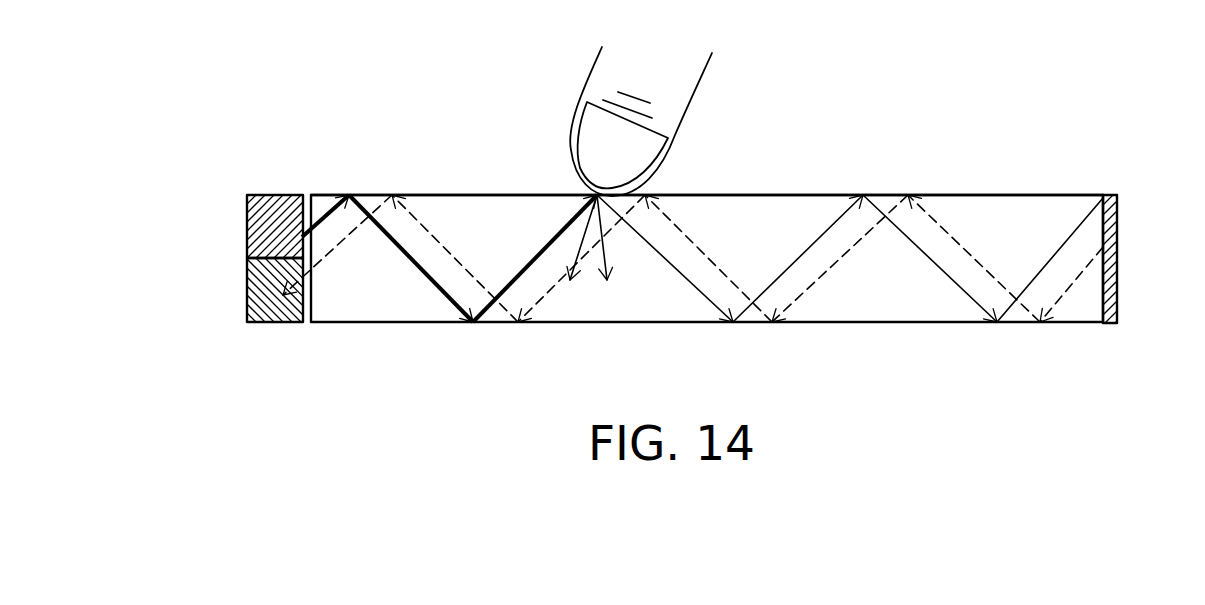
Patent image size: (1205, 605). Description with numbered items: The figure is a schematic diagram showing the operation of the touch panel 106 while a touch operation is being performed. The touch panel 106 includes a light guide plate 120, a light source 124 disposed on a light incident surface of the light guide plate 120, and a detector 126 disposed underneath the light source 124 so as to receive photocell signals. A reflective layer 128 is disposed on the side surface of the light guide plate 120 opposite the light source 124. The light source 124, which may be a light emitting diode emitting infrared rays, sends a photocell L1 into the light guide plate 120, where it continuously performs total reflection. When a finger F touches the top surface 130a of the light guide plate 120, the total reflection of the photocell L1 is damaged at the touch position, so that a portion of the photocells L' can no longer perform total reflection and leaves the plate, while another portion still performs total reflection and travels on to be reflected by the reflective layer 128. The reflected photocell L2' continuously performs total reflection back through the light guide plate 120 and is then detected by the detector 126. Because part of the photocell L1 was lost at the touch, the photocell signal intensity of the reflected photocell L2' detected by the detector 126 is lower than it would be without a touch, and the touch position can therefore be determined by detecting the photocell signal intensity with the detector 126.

The touch panel 106 is at (1168, 385).
The light guide plate 120 is at (1000, 213).
The light source 124 is at (258, 226).
The detector 126 is at (258, 287).
The reflective layer 128 is at (1115, 262).
The top surface 130a is at (500, 192).
The finger F is at (608, 72).
The photocell L1 is at (449, 208).
The photocell L' is at (609, 286).
The reflected photocell L2' is at (693, 291).